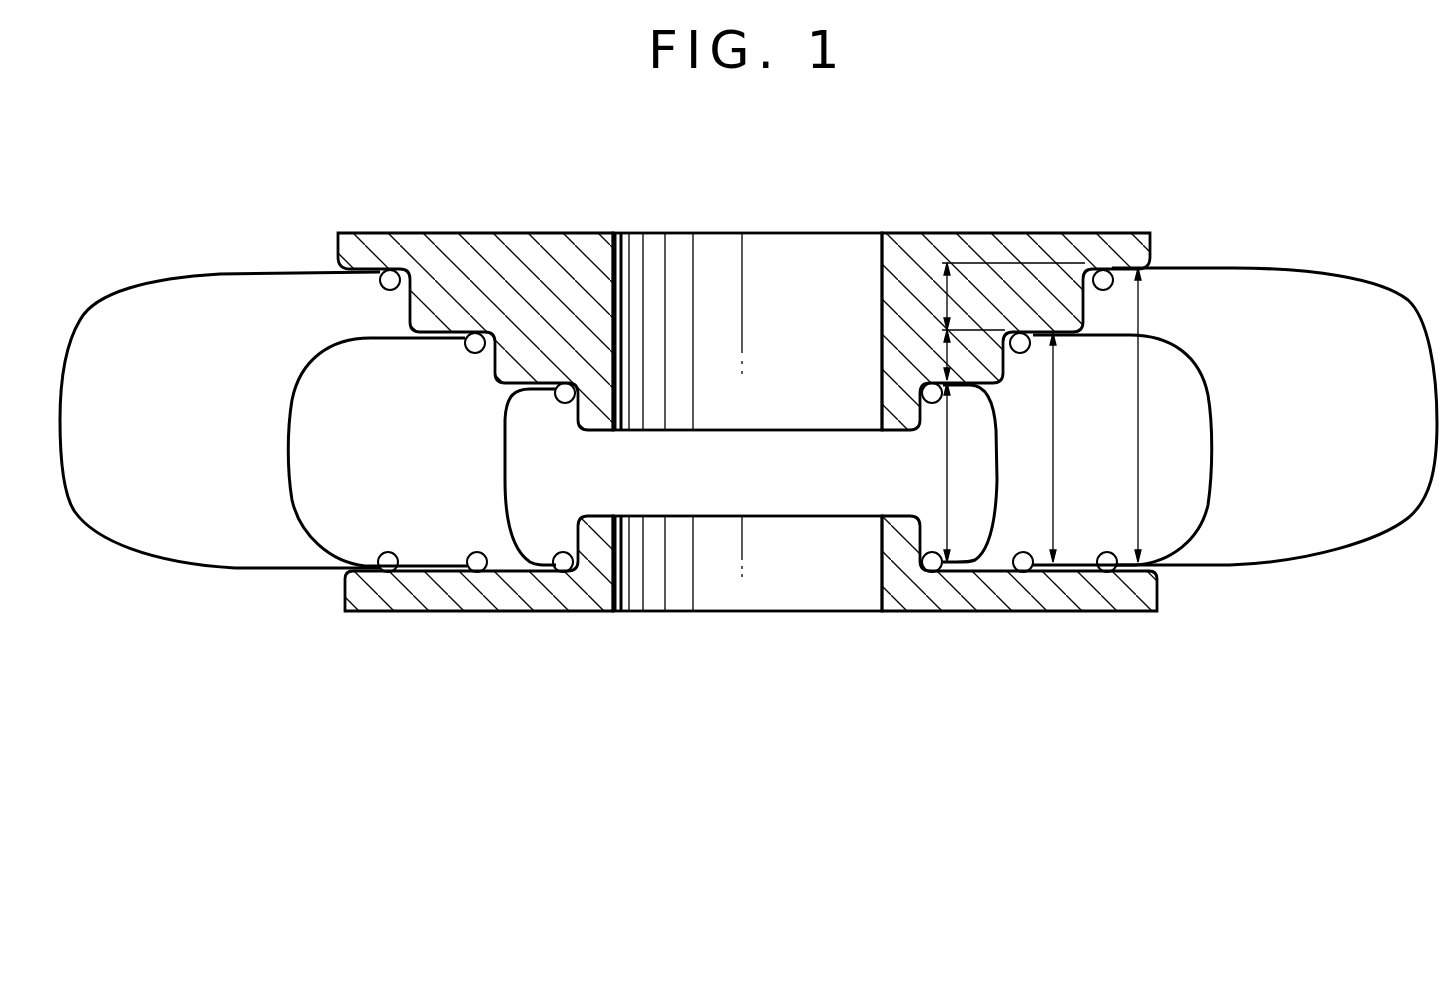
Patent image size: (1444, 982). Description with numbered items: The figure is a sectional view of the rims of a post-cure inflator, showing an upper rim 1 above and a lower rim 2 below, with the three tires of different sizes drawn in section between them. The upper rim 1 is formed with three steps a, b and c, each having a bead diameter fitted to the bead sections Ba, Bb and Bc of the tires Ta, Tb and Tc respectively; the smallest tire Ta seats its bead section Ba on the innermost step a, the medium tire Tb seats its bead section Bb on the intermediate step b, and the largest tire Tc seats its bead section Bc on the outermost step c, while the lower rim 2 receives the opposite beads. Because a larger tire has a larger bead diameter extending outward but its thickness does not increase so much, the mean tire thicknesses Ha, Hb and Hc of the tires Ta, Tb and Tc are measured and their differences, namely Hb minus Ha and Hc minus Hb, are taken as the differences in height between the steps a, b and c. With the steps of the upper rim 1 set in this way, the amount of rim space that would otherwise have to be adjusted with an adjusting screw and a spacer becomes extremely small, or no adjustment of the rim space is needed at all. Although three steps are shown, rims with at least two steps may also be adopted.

The upper rim 1 is at (749, 233).
The lower rim 2 is at (755, 613).
The first step a is at (578, 413).
The second step b is at (495, 362).
The third step c is at (408, 300).
The bead section of tire Ta Ba is at (567, 573).
The bead section of tire Tb Bb is at (478, 573).
The bead section of tire Tc Bc is at (390, 573).
The tire Ta is at (505, 478).
The tire Tb is at (292, 478).
The tire Tc is at (62, 447).
The mean tire thickness Ha is at (928, 472).
The mean tire thickness Hb is at (1034, 447).
The mean tire thickness Hc is at (1120, 415).